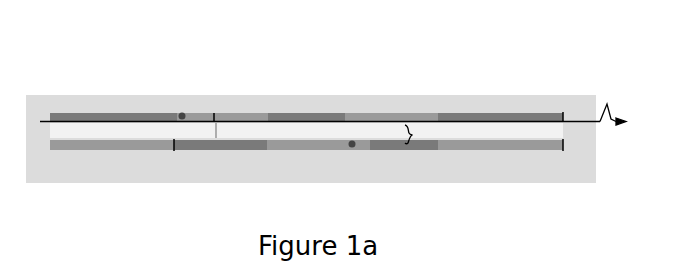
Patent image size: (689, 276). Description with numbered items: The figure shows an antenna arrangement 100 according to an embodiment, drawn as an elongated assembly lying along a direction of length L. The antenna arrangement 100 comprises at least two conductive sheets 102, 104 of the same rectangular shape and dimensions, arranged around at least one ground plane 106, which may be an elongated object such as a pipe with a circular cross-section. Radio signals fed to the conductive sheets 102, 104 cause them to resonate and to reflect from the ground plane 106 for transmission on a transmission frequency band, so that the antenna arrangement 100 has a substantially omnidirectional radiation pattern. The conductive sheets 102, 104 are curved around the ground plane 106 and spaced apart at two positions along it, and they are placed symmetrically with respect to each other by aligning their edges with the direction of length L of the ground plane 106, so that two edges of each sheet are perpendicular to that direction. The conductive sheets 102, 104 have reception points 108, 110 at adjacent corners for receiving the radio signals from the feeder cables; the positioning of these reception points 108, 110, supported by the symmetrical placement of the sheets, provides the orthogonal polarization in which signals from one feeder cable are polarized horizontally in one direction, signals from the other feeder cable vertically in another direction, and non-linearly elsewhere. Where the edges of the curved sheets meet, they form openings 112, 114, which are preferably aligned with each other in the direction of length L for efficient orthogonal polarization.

The antenna arrangement 100 is at (187, 86).
The conductive sheet 102 is at (214, 122).
The conductive sheet 104 is at (395, 113).
The ground plane 106 is at (151, 149).
The reception point 108 is at (179, 113).
The reception point 110 is at (354, 148).
The opening 112 is at (216, 123).
The opening 114 is at (413, 135).
The direction of length L is at (333, 94).